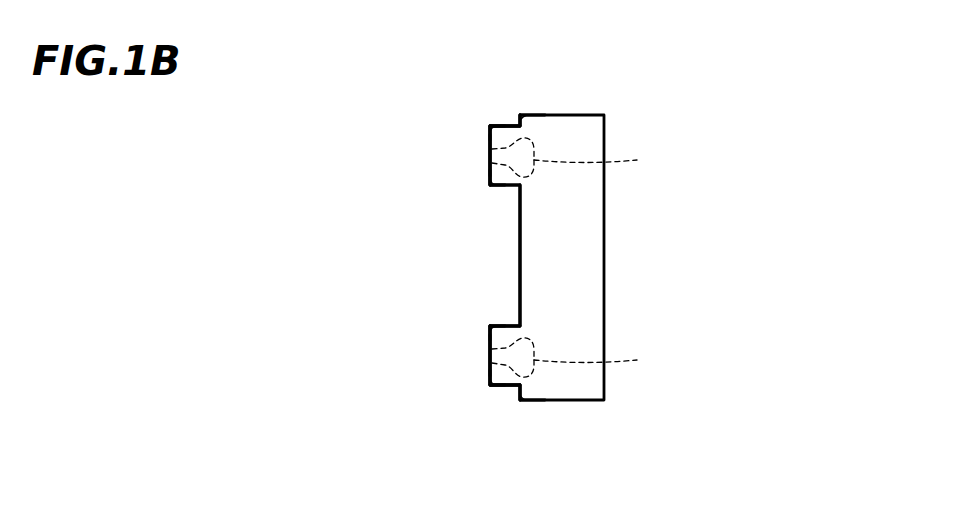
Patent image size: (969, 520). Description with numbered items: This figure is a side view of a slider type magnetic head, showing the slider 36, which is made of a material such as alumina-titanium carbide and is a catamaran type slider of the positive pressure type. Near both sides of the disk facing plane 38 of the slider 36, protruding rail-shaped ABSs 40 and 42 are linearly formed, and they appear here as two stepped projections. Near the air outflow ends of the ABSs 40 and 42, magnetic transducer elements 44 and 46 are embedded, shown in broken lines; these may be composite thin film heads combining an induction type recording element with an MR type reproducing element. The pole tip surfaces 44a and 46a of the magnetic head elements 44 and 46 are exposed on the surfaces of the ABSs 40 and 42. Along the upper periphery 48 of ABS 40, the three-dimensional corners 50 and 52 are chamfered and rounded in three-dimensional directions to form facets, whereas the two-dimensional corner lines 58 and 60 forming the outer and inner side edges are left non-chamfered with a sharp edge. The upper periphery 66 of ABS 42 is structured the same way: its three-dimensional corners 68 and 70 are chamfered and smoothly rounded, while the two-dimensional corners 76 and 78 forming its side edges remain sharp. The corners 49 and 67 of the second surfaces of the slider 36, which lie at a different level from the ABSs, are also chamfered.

The slider 36 is at (633, 70).
The disk facing plane 38 is at (453, 259).
The ABS 40 is at (488, 153).
The ABS 42 is at (488, 353).
The magnetic transducer element 44 is at (580, 157).
The pole tip surface 44a is at (490, 158).
The magnetic transducer element 46 is at (579, 357).
The pole tip surface 46a is at (490, 358).
The upper periphery 48 is at (482, 104).
The corner of second surface 49 is at (520, 118).
The three-dimensional corner 50 is at (492, 127).
The three-dimensional corner 52 is at (491, 190).
The two-dimensional corner line 58 is at (490, 128).
The two-dimensional corner line 60 is at (490, 185).
The upper periphery 66 is at (482, 408).
The corner of second surface 67 is at (521, 397).
The three-dimensional corner 68 is at (492, 386).
The three-dimensional corner 70 is at (492, 328).
The two-dimensional corner 76 is at (490, 385).
The two-dimensional corner 78 is at (490, 328).